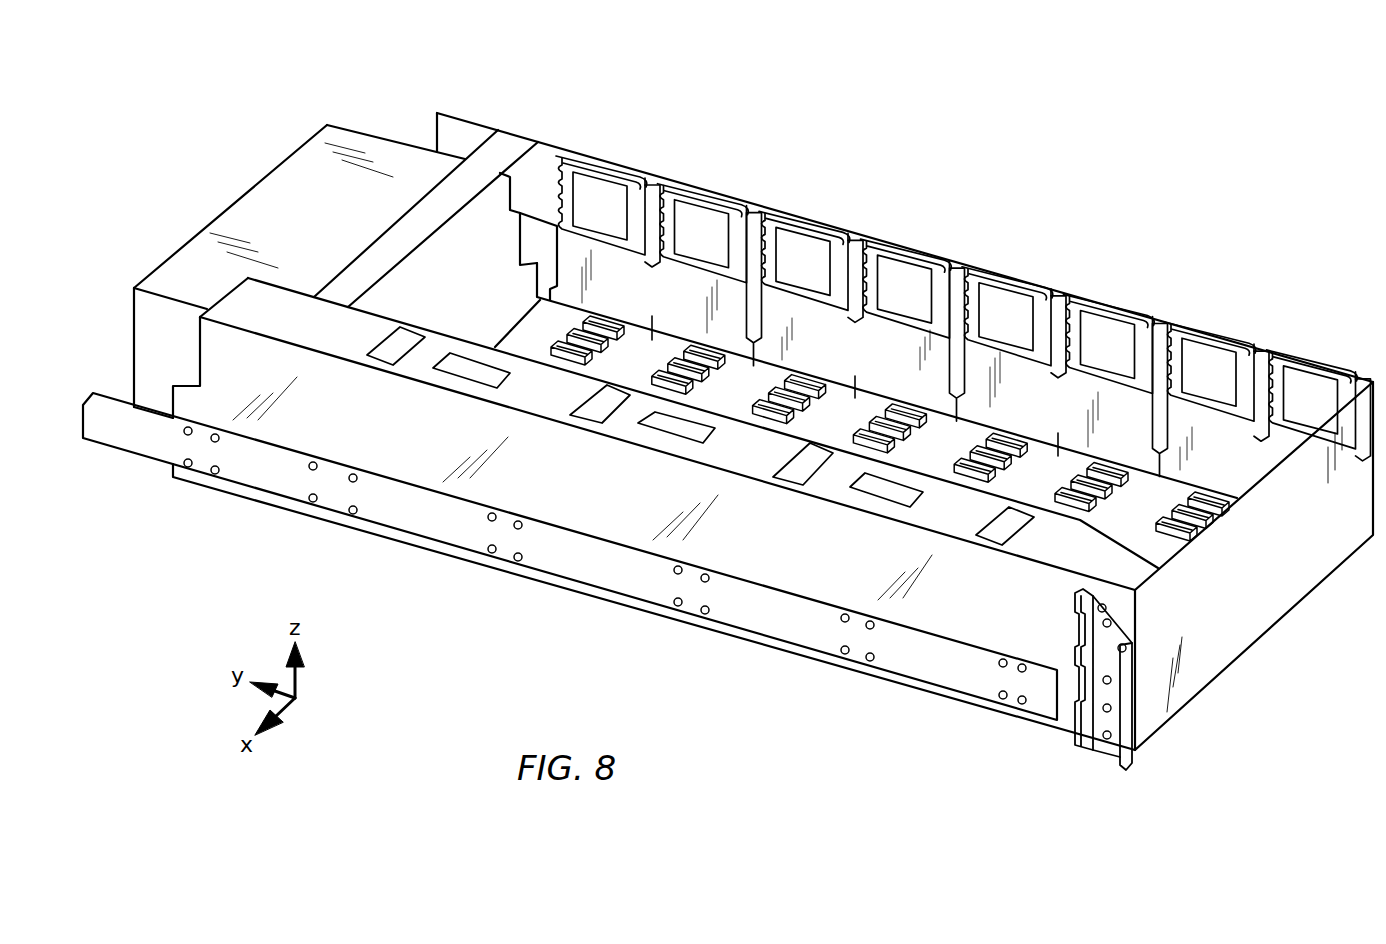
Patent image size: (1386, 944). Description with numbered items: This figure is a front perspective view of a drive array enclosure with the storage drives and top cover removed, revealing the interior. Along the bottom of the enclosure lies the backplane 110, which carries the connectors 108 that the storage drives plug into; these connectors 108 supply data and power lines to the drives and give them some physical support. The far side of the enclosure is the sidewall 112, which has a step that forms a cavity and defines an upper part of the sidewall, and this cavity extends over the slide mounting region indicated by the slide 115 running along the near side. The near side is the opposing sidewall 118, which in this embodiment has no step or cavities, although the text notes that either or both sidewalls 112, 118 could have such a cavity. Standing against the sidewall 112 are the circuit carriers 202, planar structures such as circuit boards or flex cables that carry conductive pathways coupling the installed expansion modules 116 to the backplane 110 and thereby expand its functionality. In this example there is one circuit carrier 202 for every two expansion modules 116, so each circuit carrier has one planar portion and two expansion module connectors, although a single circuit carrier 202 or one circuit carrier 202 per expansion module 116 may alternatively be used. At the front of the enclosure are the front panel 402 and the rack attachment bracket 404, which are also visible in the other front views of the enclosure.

The connectors 108 is at (586, 326).
The backplane 110 is at (712, 401).
The sidewall 112 is at (537, 139).
The slide 115 is at (609, 592).
The expansion module 116 is at (581, 220).
The opposing sidewall 118 is at (804, 573).
The circuit carrier 202 is at (636, 309).
The front panel 402 is at (1218, 668).
The rack attachment bracket 404 is at (1128, 770).